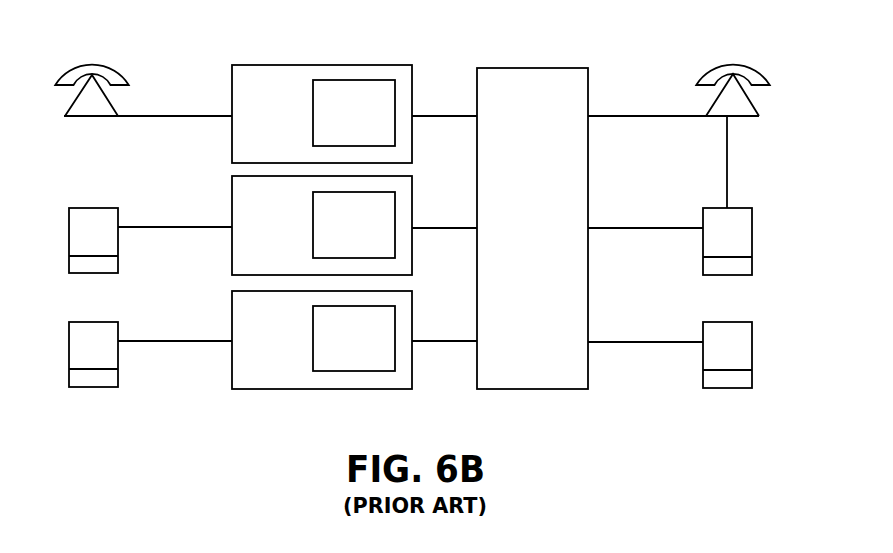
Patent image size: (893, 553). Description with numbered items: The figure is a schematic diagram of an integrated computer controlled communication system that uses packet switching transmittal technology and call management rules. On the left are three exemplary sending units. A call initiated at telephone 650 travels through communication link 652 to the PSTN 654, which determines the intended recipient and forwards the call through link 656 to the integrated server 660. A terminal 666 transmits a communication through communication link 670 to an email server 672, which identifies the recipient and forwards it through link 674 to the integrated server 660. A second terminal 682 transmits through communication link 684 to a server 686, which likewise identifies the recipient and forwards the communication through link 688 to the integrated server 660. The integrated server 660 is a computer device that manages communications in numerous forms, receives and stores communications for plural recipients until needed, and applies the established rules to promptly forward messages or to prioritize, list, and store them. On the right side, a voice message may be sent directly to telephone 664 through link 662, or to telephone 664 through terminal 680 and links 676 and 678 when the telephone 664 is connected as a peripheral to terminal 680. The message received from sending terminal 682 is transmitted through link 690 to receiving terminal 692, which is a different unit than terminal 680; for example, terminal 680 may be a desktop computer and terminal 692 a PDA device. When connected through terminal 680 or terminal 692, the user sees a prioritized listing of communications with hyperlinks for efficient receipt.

The telephone 650 is at (90, 64).
The communication link 652 is at (153, 116).
The PSTN 654 is at (365, 65).
The link 656 is at (465, 116).
The integrated server 660 is at (552, 68).
The link 662 is at (635, 116).
The telephone 664 is at (723, 65).
The terminal 666 is at (107, 208).
The communication link 670 is at (153, 227).
The email server 672 is at (412, 183).
The link 674 is at (458, 228).
The link 676 is at (635, 228).
The link 678 is at (727, 168).
The receiving terminal 680 is at (752, 223).
The terminal 682 is at (112, 322).
The communication link 684 is at (175, 341).
The server 686 is at (412, 318).
The link 688 is at (458, 341).
The link 690 is at (642, 342).
The receiving terminal 692 is at (740, 322).